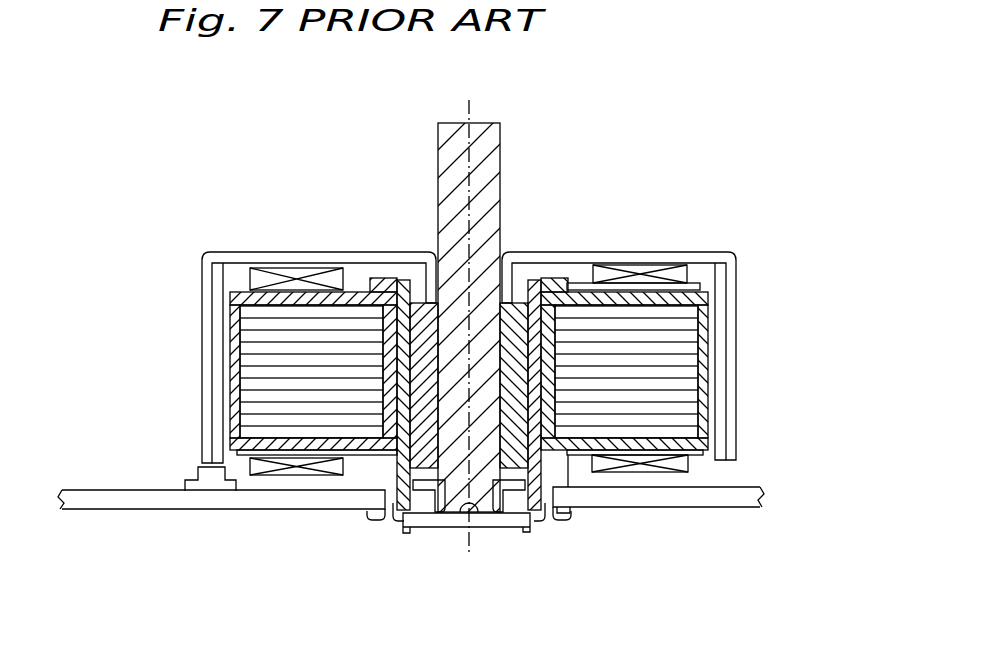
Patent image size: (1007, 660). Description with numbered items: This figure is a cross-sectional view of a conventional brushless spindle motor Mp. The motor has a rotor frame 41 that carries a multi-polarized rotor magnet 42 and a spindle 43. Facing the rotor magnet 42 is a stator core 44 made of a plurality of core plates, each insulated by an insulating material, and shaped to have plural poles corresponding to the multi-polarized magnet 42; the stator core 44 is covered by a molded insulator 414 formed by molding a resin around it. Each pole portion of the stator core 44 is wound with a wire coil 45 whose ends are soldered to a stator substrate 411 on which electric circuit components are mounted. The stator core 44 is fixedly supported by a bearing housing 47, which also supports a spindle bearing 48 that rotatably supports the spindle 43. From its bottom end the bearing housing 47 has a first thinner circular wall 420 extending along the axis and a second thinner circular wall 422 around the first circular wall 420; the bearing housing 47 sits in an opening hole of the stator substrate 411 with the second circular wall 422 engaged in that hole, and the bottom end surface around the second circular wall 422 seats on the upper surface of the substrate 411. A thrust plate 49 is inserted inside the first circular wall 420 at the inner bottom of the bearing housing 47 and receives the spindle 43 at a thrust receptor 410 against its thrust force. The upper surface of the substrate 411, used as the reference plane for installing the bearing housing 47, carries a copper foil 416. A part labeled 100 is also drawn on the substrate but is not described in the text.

The spindle motor Mp is at (766, 181).
The spindle 43 is at (480, 167).
The rotor frame 41 is at (618, 252).
The rotor magnet 42 is at (721, 298).
The molded insulator 414 is at (235, 297).
The stator core 44 is at (263, 327).
The spindle bearing 48 is at (432, 332).
The wire coil 45 is at (293, 468).
The mounting bracket 100 is at (203, 483).
The copper foil 416 is at (140, 490).
The stator substrate 411 is at (732, 500).
The bearing housing 47 is at (383, 517).
The first circular wall 420 is at (540, 528).
The second circular wall 422 is at (565, 515).
The thrust plate 49 is at (490, 523).
The thrust receptor 410 is at (468, 510).